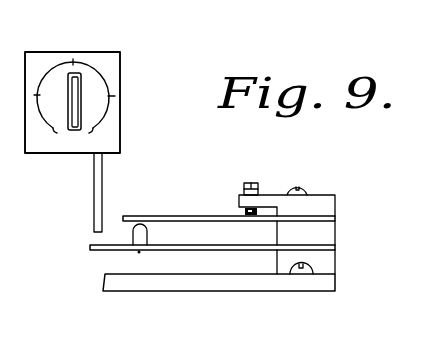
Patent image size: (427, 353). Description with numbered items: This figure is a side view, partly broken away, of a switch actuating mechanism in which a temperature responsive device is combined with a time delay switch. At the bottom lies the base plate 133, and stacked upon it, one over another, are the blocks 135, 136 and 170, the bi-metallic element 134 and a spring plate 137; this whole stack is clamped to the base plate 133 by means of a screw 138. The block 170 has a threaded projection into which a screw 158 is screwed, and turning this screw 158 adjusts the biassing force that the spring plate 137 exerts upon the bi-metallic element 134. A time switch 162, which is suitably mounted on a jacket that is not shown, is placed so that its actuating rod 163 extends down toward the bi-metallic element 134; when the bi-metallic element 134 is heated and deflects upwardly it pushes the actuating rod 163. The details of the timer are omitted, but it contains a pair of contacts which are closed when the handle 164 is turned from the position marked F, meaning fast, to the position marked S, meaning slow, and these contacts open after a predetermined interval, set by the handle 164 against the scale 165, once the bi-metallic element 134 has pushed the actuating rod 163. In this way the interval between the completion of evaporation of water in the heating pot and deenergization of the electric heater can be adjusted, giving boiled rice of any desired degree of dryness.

The base plate 133 is at (298, 282).
The bi-metallic element 134 is at (197, 250).
The block 135 is at (323, 265).
The block 136 is at (322, 235).
The spring plate 137 is at (170, 215).
The screw 138 is at (300, 188).
The screw 158 is at (250, 183).
The time switch 162 is at (177, 131).
The actuating rod 163 is at (94, 199).
The handle 164 is at (67, 86).
The scale 165 is at (106, 78).
The block 170 is at (320, 205).